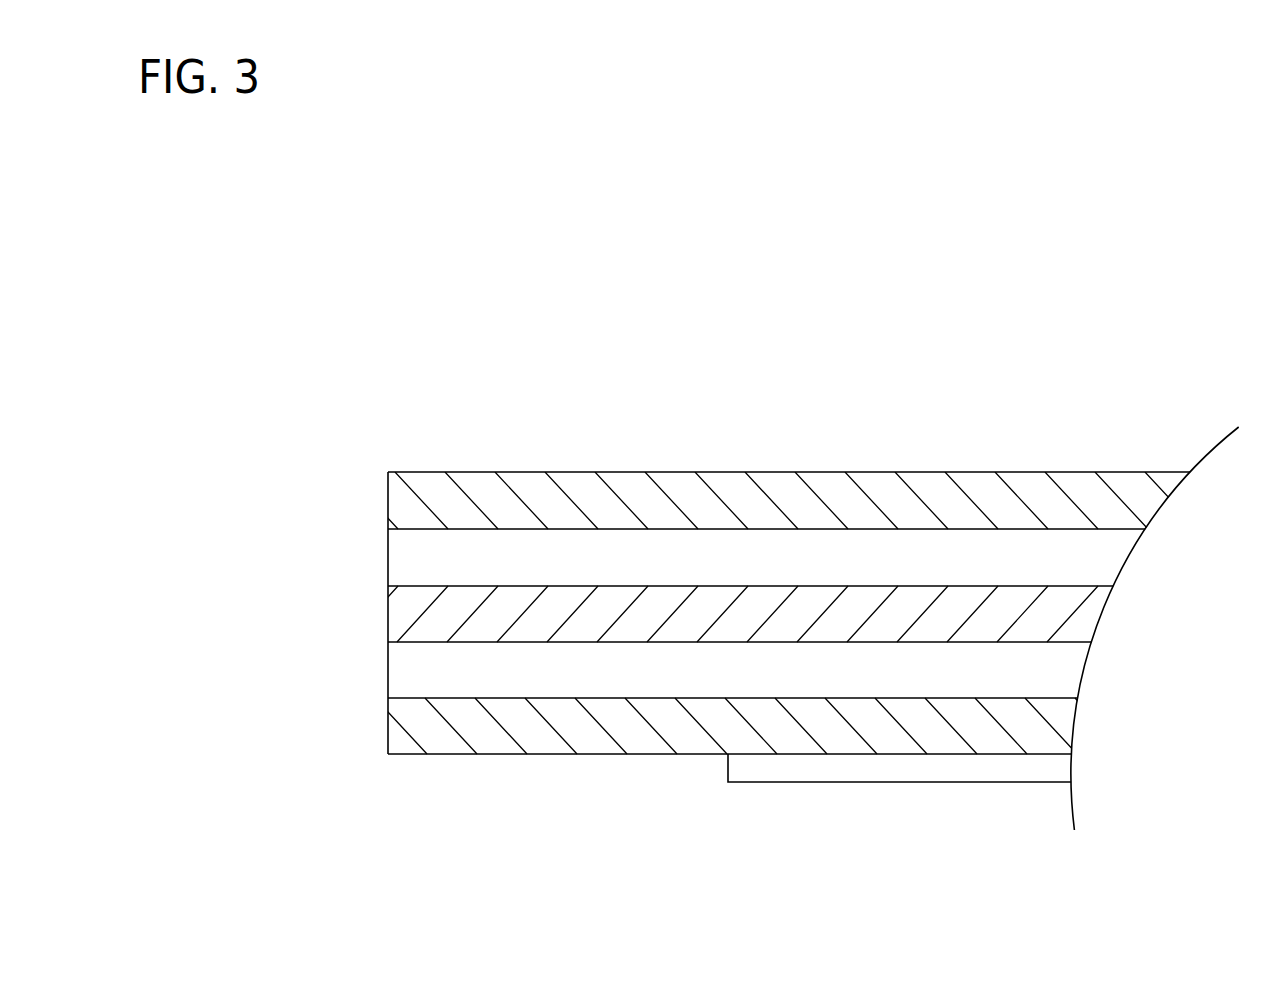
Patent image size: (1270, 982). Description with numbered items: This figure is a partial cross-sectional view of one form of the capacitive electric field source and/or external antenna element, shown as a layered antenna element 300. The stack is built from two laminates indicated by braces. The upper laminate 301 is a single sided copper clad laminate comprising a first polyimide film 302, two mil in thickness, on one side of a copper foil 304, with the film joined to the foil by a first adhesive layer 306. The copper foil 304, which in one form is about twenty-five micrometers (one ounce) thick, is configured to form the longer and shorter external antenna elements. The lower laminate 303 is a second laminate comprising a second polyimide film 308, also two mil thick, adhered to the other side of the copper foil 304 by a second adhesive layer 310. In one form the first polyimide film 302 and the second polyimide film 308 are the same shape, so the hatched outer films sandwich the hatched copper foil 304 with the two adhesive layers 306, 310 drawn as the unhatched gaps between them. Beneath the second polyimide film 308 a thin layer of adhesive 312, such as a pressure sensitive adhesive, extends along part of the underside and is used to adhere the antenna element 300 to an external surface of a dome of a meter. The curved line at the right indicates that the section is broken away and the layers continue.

The antenna element 300 is at (1132, 284).
The first stack 301 is at (358, 473).
The first polyimide film 302 is at (922, 472).
The second stack 303 is at (332, 642).
The copper foil 304 is at (1081, 614).
The first adhesive layer 306 is at (625, 553).
The second polyimide film 308 is at (494, 739).
The second adhesive layer 310 is at (635, 672).
The adhesive 312 is at (965, 770).